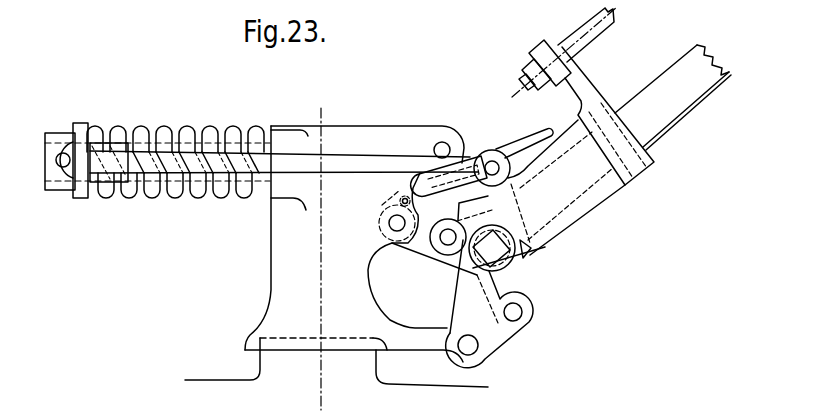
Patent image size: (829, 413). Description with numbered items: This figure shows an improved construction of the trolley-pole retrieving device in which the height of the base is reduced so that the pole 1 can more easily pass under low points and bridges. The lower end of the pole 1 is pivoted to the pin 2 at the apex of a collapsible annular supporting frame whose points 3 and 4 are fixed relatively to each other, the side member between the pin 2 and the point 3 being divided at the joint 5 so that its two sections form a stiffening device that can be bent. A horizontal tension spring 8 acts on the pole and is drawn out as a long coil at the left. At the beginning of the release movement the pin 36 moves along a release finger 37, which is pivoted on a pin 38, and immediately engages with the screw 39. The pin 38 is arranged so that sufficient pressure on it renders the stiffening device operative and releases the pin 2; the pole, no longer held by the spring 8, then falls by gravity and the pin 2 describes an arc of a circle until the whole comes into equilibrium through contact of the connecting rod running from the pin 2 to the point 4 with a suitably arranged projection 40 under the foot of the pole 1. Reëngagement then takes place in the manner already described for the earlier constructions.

The pole 1 is at (661, 118).
The pin 2 is at (516, 262).
The frame member point 3 is at (397, 231).
The frame member point 4 is at (480, 356).
The joint 5 is at (447, 246).
The tension spring 8 is at (225, 185).
The pin 36 is at (502, 168).
The release finger 37 is at (428, 188).
The pin 38 is at (402, 198).
The screw 39 is at (483, 151).
The projection 40 is at (533, 250).